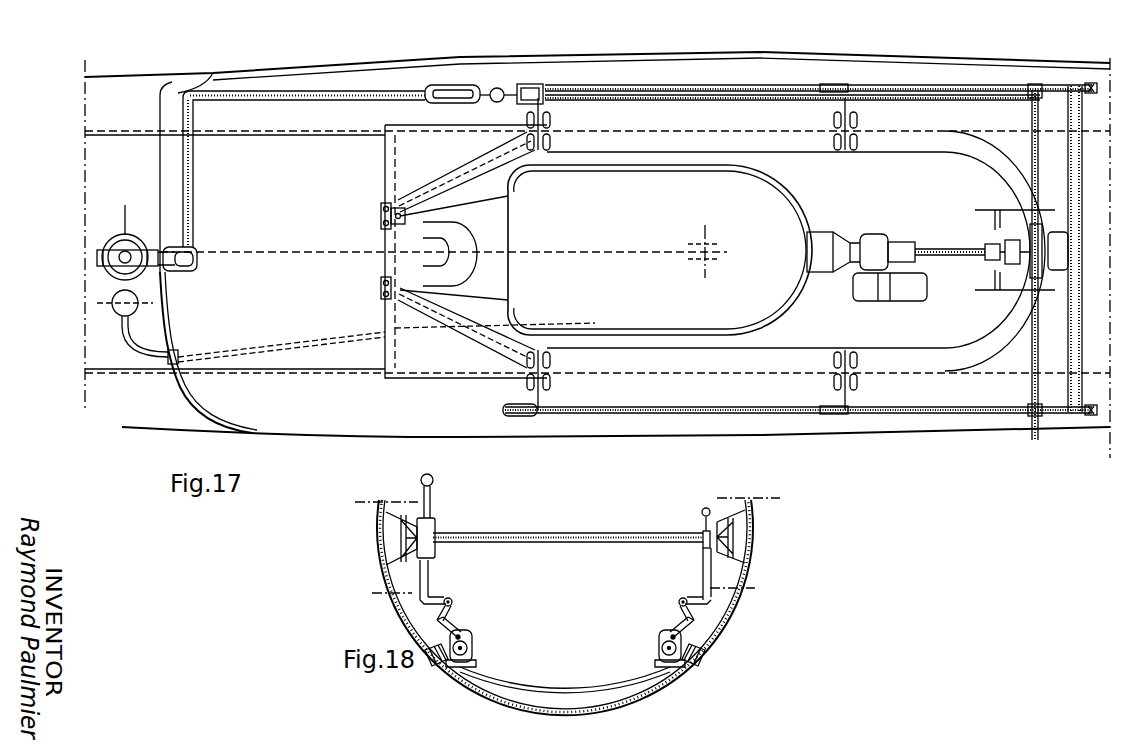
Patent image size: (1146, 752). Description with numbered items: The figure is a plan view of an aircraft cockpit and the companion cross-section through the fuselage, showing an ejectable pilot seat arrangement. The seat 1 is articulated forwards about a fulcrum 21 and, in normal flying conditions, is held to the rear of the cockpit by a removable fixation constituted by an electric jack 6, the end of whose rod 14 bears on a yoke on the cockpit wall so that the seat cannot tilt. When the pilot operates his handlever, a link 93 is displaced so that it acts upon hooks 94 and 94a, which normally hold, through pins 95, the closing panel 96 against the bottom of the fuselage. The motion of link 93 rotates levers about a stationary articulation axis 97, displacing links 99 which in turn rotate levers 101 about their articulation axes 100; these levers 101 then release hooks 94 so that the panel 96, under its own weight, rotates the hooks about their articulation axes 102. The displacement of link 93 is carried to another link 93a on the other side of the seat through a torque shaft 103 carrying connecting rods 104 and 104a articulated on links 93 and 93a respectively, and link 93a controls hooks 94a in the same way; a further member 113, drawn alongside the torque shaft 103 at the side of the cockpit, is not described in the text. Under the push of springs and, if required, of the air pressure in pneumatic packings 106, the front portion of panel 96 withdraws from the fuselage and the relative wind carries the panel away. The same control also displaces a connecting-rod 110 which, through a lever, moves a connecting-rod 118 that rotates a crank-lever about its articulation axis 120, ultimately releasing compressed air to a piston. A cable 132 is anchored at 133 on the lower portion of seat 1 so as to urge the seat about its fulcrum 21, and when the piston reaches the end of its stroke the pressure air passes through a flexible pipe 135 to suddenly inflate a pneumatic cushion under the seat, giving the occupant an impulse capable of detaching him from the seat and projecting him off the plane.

In FIG. 17, the seat 1 is at (790, 292).
In FIG. 17, the electric jack 6 is at (893, 301).
In FIG. 17, the rod of the jack 14 is at (941, 251).
In FIG. 17, the fulcrum 21 is at (410, 217).
In FIG. 17, the link 93 is at (672, 91).
In FIG. 17, the link 93a is at (765, 416).
In FIG. 18, the hooks 94 is at (453, 630).
In FIG. 18, the hooks 94a is at (672, 630).
In FIG. 18, the pins 95 is at (468, 647).
In FIG. 18, the closing panel 96 is at (549, 701).
In FIG. 18, the stationary articulation axis 97 is at (705, 570).
In FIG. 18, the links 99 is at (430, 579).
In FIG. 18, the articulation axes 100 is at (453, 602).
In FIG. 18, the levers 101 is at (448, 617).
In FIG. 18, the articulation axes 102 is at (461, 637).
In FIG. 17, the torque shaft 103 is at (1083, 190).
In FIG. 18, the torque shaft 103 is at (575, 532).
In FIG. 17, the connecting rod 104 is at (1092, 93).
In FIG. 17, the connecting rod 104a is at (1091, 404).
In FIG. 18, the pneumatic packings 106 is at (437, 665).
In FIG. 17, the connecting-rod 110 is at (650, 101).
In FIG. 17, the vertical bar 113 is at (1039, 165).
In FIG. 17, the connecting-rod 118 is at (346, 97).
In FIG. 17, the articulation axis 120 is at (195, 158).
In FIG. 17, the cable 132 is at (271, 256).
In FIG. 17, the anchoring point 133 is at (591, 327).
In FIG. 17, the flexible pipe 135 is at (129, 347).